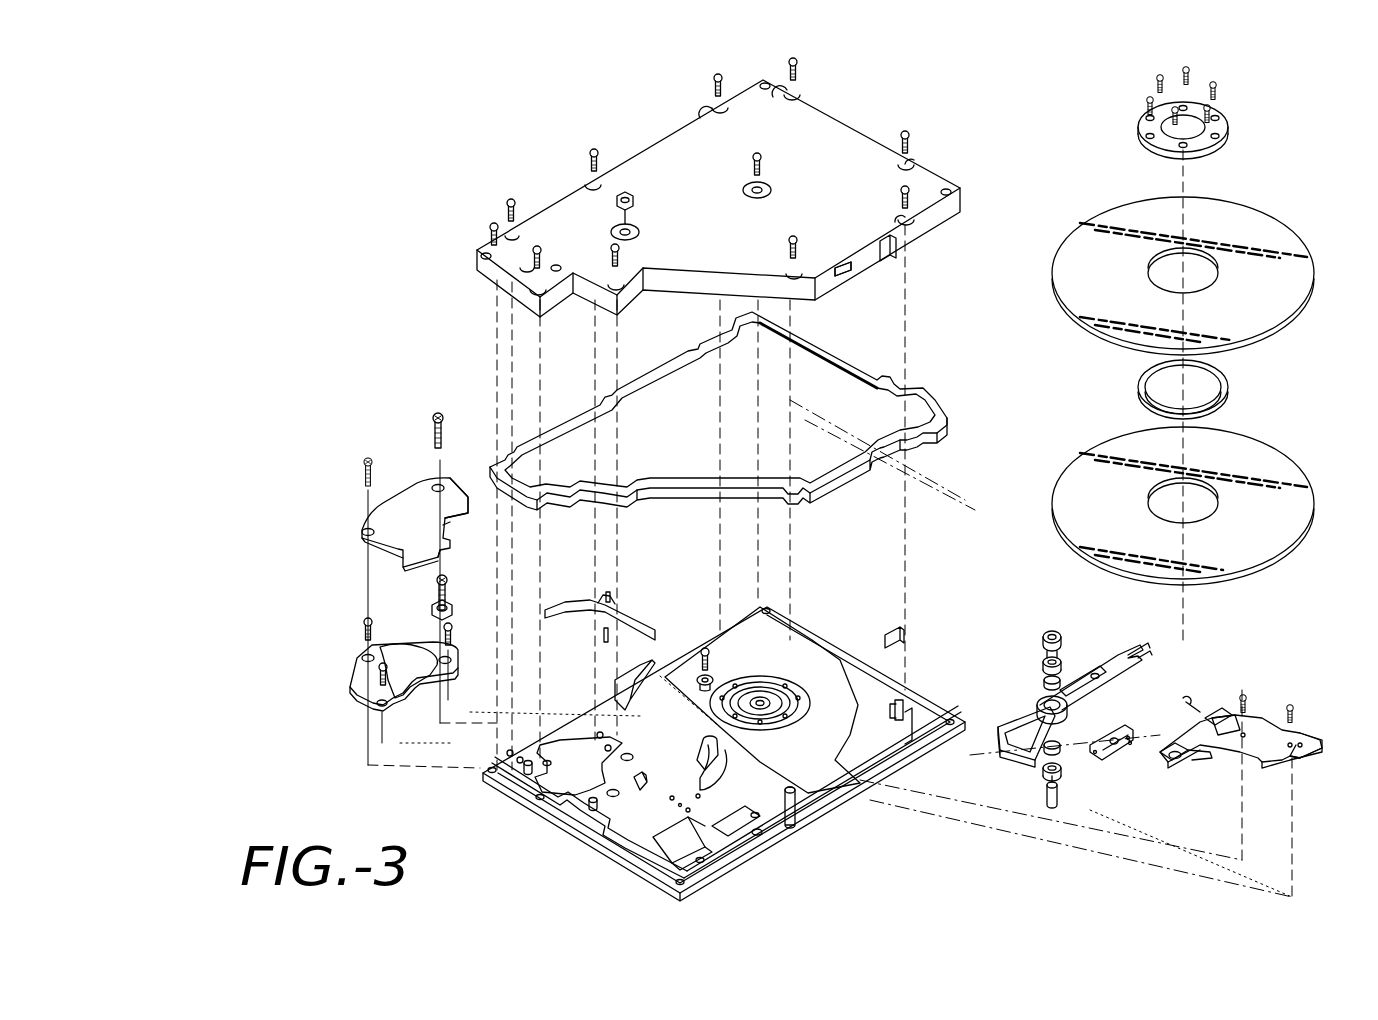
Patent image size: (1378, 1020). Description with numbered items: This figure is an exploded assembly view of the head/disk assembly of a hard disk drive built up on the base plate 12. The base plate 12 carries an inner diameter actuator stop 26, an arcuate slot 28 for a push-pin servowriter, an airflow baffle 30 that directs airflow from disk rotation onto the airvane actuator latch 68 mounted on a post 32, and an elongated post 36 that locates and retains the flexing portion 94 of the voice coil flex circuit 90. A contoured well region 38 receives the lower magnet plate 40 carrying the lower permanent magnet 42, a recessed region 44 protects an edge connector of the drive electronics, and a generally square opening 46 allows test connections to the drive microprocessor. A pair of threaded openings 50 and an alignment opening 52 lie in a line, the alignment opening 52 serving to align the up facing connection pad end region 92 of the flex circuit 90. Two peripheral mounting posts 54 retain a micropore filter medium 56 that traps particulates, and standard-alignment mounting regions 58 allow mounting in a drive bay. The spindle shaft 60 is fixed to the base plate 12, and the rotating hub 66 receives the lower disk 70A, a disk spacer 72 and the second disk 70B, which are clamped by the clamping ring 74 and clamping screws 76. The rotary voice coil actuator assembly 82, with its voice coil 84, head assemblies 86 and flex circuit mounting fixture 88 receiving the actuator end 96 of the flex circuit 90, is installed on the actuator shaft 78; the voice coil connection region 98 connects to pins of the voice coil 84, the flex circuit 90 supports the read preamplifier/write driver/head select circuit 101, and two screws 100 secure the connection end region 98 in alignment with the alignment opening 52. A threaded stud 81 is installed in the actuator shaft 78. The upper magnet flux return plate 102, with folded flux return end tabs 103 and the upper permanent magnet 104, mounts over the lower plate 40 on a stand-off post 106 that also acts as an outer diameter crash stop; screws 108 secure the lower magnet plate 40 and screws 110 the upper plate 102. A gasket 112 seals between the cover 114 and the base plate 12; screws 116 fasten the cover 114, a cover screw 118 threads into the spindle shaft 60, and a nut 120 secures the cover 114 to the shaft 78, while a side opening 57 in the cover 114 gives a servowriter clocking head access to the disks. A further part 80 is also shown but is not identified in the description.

The base plate 12 is at (875, 768).
The inner diameter actuator limit or stop 26 is at (725, 675).
The arcuate slot 28 is at (730, 760).
The airflow baffle 30 is at (636, 676).
The post 32 is at (600, 636).
The elongated post 36 is at (643, 790).
The contoured well region 38 is at (570, 766).
The lower magnet plate 40 is at (365, 668).
The lower permanent magnet 42 is at (408, 650).
The recessed region 44 is at (620, 848).
The generally square opening 46 is at (710, 845).
The threaded openings 50 is at (680, 798).
The alignment opening 52 is at (722, 832).
The peripheral mounting posts 54 is at (893, 710).
The micropore filter medium 56 is at (886, 636).
The side opening 57 is at (845, 278).
The standard-alignment mounting regions 58 is at (710, 112).
The spindle shaft 60 is at (763, 698).
The rotating hub 66 is at (798, 685).
The airvane actuator latch 68 is at (622, 608).
The lower disk 70A is at (1300, 478).
The second disk 70B is at (1300, 248).
The disk spacer 72 is at (1232, 395).
The clamping ring 74 is at (1228, 132).
The clamping screws 76 is at (1220, 85).
The rotary voice coil actuator shaft 78 is at (1060, 795).
The bearings 80 is at (1062, 664).
The threaded stud 81 is at (1060, 630).
The rotary voice coil actuator assembly 82 is at (1030, 655).
The voice coil 84 is at (1008, 720).
The head assemblies 86 is at (1130, 655).
The flex circuit mounting fixture 88 is at (1118, 728).
The voice coil flex circuit 90 is at (1265, 718).
The up facing connection pad end region 92 is at (1300, 736).
The flexing portion 94 is at (1235, 745).
The actuator end 96 is at (1168, 752).
The voice coil connection region 98 is at (1200, 762).
The screws 100 is at (1243, 692).
The read preamplifier/write driver/head select circuit 101 is at (1218, 708).
The upper magnet flux return plate 102 is at (410, 498).
The folded flux return end tabs 103 is at (462, 515).
The upper permanent magnet 104 is at (446, 535).
The post 106 is at (430, 588).
The screws 108 is at (364, 622).
The screws 110 is at (444, 435).
The gasket 112 is at (830, 338).
The cover 114 is at (845, 130).
The screws 116 is at (714, 80).
The cover screw 118 is at (765, 160).
The nut 120 is at (635, 197).